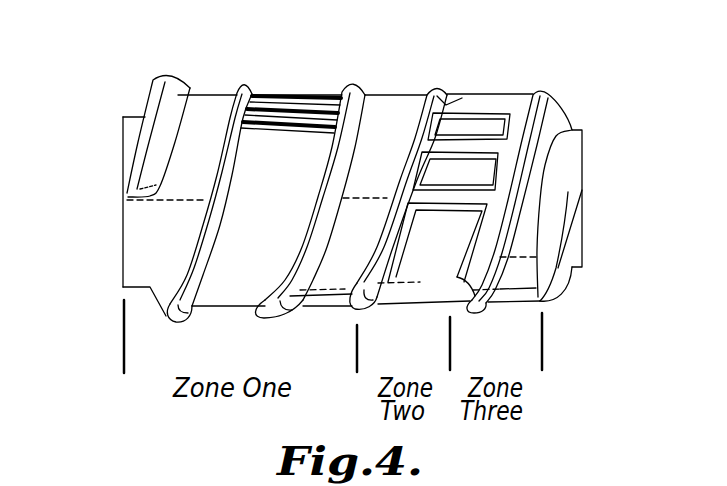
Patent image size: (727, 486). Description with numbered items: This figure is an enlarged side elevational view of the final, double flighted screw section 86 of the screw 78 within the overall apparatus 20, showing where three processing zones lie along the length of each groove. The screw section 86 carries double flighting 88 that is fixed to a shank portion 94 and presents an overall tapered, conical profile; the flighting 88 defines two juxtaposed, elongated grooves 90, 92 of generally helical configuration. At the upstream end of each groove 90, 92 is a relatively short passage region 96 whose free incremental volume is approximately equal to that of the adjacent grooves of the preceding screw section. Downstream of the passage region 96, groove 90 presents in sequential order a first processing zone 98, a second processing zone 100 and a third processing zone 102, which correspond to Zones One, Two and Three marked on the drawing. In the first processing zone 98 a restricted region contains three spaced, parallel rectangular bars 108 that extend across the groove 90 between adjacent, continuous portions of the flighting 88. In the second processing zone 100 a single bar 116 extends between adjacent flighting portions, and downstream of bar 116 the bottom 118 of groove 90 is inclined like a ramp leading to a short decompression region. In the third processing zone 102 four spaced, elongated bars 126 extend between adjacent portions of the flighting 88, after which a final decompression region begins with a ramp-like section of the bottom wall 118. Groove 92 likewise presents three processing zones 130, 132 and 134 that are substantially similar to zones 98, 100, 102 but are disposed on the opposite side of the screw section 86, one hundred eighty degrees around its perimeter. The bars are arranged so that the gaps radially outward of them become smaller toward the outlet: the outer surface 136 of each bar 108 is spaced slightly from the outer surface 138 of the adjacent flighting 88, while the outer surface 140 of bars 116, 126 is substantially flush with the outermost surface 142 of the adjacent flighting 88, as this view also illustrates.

The screw assembly 20 is at (619, 153).
The screw 78 is at (104, 150).
The screw section 86 is at (120, 115).
The double flighting 88 is at (160, 79).
The groove 90 is at (208, 102).
The groove 92 is at (233, 294).
The shank portion 94 is at (126, 217).
The passage region 96 is at (157, 250).
The first processing zone 98 is at (318, 320).
The second processing zone 100 is at (419, 320).
The third processing zone 102 is at (505, 311).
The rectangular bars 108 is at (283, 128).
The bar 116 is at (412, 297).
The bottom of groove 118 is at (383, 113).
The elongated bars 126 is at (445, 145).
The first processing zone of groove 92 130 is at (311, 73).
The second processing zone of groove 92 132 is at (442, 74).
The third processing zone of groove 92 134 is at (540, 66).
The outer surface of bar 108 136 is at (283, 97).
The outer surface of flighting 138 is at (344, 97).
The outer surface of bars 116, 126 140 is at (460, 107).
The outermost surface of flighting 142 is at (528, 99).